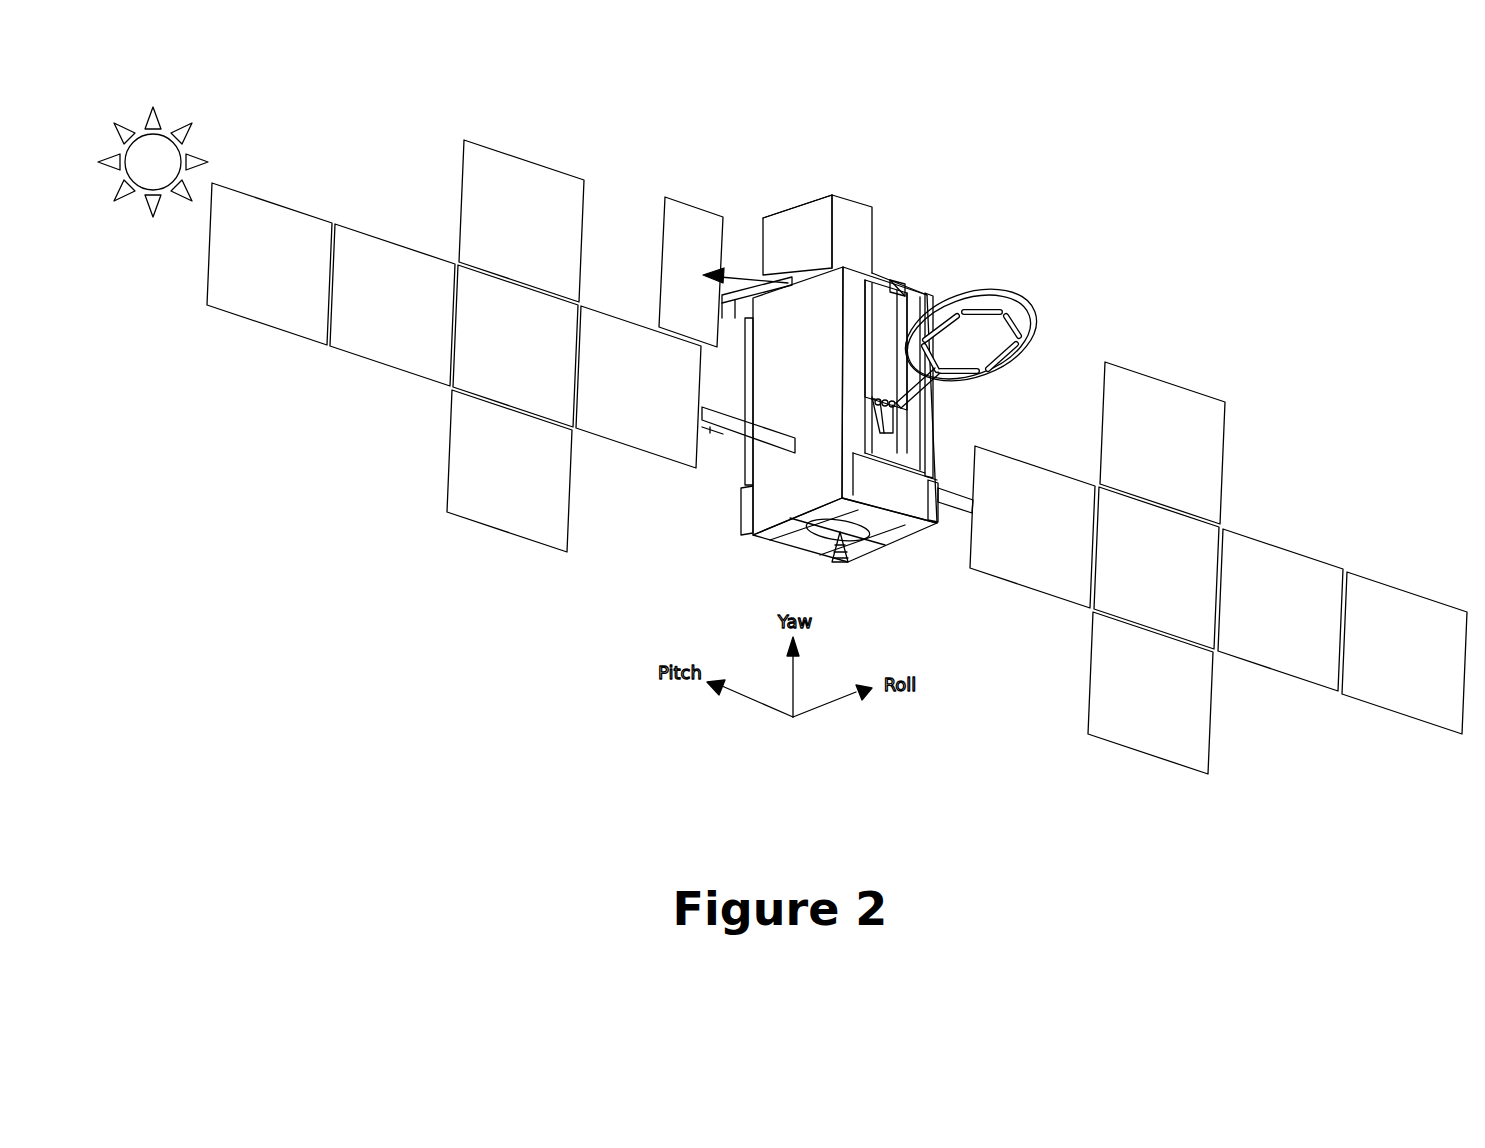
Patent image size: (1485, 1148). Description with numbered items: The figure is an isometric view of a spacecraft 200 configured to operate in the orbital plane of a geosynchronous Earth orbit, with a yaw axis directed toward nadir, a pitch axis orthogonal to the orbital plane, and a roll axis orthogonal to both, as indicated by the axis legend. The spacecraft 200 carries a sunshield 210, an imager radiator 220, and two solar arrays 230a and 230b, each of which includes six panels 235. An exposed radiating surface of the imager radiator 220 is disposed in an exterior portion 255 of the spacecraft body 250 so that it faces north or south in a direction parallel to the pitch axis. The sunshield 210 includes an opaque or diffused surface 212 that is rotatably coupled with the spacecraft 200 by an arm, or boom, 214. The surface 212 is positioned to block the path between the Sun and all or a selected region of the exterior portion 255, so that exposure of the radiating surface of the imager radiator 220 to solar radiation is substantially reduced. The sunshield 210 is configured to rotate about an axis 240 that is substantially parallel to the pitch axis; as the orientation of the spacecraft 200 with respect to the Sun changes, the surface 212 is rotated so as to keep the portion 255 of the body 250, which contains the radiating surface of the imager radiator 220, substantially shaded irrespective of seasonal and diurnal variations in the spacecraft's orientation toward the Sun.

The spacecraft 200 is at (398, 90).
The sunshield 210 is at (674, 162).
The opaque or diffused surface 212 is at (662, 242).
The arm 214 is at (722, 283).
The imager radiator 220 is at (810, 198).
The solar array 230a is at (318, 350).
The solar array 230b is at (1012, 586).
The panel 235 is at (238, 254).
The axis 240 is at (743, 275).
The spacecraft body 250 is at (752, 533).
The exterior portion 255 is at (782, 249).